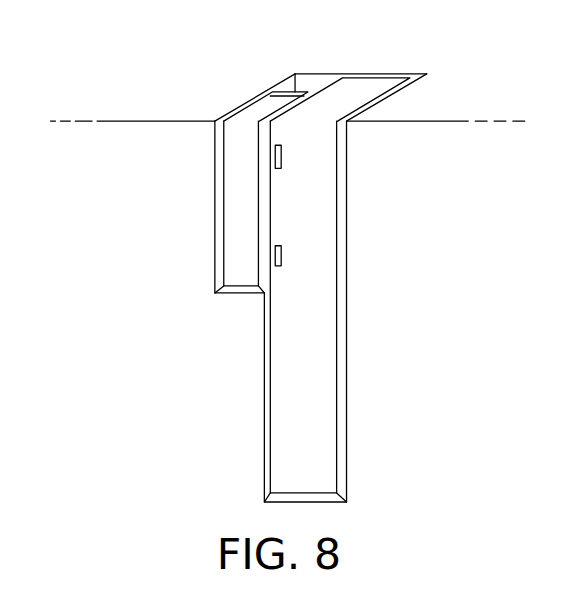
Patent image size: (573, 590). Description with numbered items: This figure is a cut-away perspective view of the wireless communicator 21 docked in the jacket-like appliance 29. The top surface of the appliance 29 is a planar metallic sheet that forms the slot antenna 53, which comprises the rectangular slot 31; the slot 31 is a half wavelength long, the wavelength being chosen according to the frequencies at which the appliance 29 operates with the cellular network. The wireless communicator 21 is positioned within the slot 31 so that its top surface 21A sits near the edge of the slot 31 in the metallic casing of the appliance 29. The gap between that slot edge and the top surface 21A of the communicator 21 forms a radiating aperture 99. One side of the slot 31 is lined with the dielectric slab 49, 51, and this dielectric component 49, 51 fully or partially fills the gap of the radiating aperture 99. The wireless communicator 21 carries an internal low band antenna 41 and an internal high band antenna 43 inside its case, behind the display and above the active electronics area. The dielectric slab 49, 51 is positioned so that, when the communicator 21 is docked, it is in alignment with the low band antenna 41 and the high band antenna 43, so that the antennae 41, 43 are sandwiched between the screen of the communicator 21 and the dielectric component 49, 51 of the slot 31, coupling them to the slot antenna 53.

The appliance 29 is at (82, 62).
The wireless communicator 21 is at (357, 260).
The top surface of the communicator 21A is at (360, 70).
The slot 31 is at (422, 76).
The radiating aperture 99 is at (303, 88).
The low band antenna 41 is at (281, 158).
The high band antenna 43 is at (281, 258).
The dielectric slab 49 is at (217, 158).
The dielectric slab 51 is at (217, 158).
The slot antenna 53 is at (204, 89).